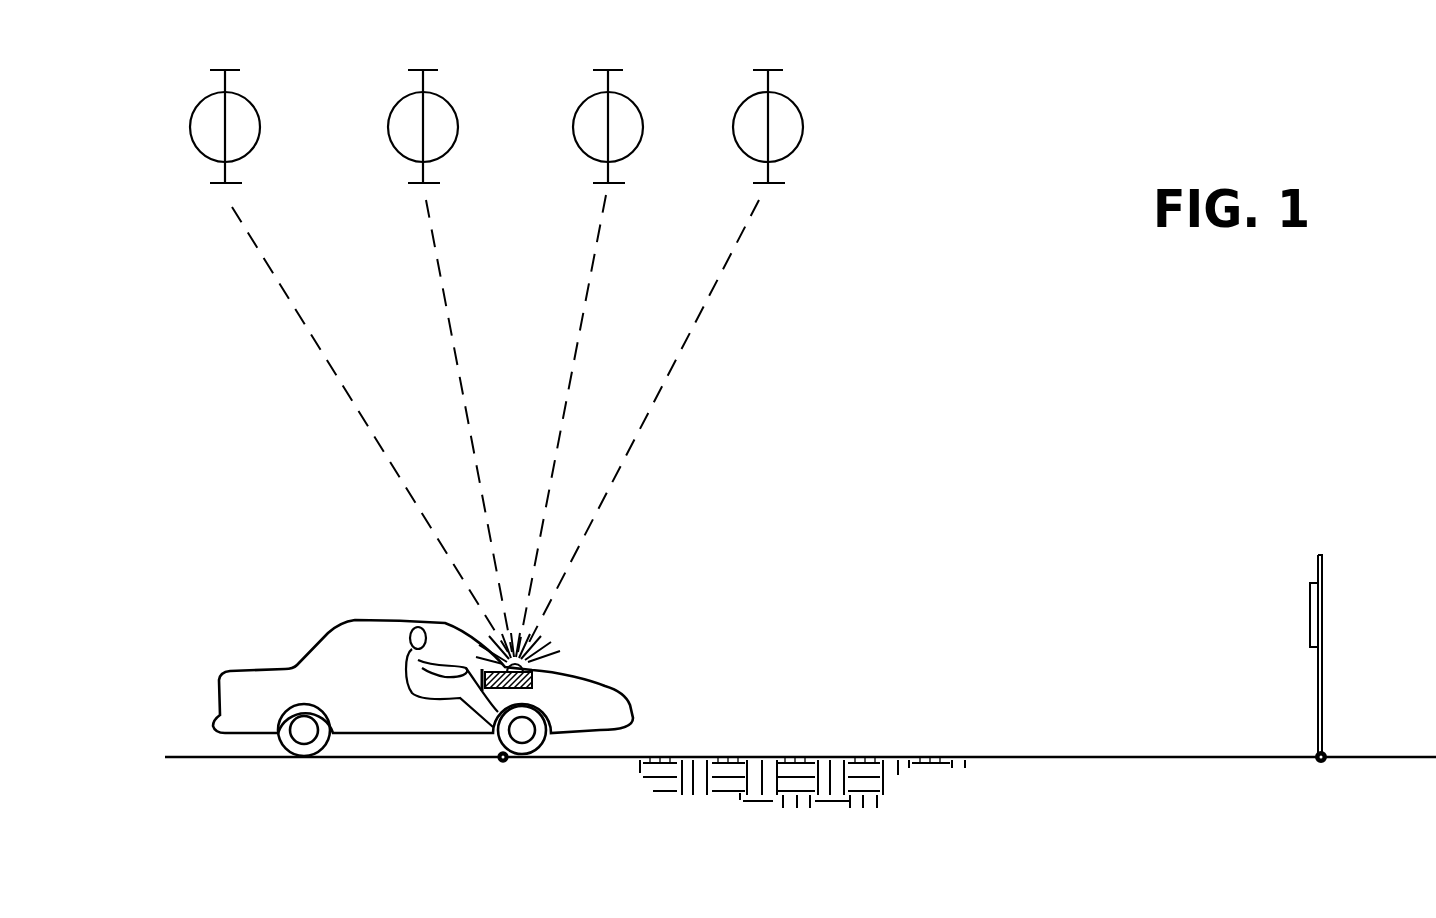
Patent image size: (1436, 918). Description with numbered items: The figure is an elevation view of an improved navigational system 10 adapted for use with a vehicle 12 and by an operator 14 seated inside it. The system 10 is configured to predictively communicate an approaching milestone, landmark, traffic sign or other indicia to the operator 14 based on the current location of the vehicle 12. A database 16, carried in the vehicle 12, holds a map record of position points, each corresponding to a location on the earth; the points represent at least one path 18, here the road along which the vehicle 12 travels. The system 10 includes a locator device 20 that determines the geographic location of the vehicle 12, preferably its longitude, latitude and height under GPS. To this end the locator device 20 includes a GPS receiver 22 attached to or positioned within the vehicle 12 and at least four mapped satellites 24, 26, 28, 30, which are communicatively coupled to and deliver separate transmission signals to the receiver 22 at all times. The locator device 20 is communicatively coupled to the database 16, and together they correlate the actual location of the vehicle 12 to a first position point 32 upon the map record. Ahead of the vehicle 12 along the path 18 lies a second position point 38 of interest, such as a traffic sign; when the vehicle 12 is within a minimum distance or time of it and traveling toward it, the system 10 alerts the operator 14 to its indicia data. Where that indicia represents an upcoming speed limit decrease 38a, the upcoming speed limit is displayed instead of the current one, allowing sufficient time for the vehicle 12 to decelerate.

The navigational system 10 is at (770, 513).
The vehicle 12 is at (293, 665).
The operator 14 is at (405, 658).
The database 16 is at (545, 671).
The path 18 is at (1035, 756).
The locator device 20 is at (254, 344).
The GPS receiver 22 is at (526, 668).
The mapped satellite 24 is at (255, 107).
The mapped satellite 26 is at (453, 107).
The mapped satellite 28 is at (638, 107).
The mapped satellite 30 is at (798, 107).
The first position point 32 is at (500, 763).
The second position point 38 is at (1318, 762).
The upcoming speed limit decrease 38a is at (1310, 612).